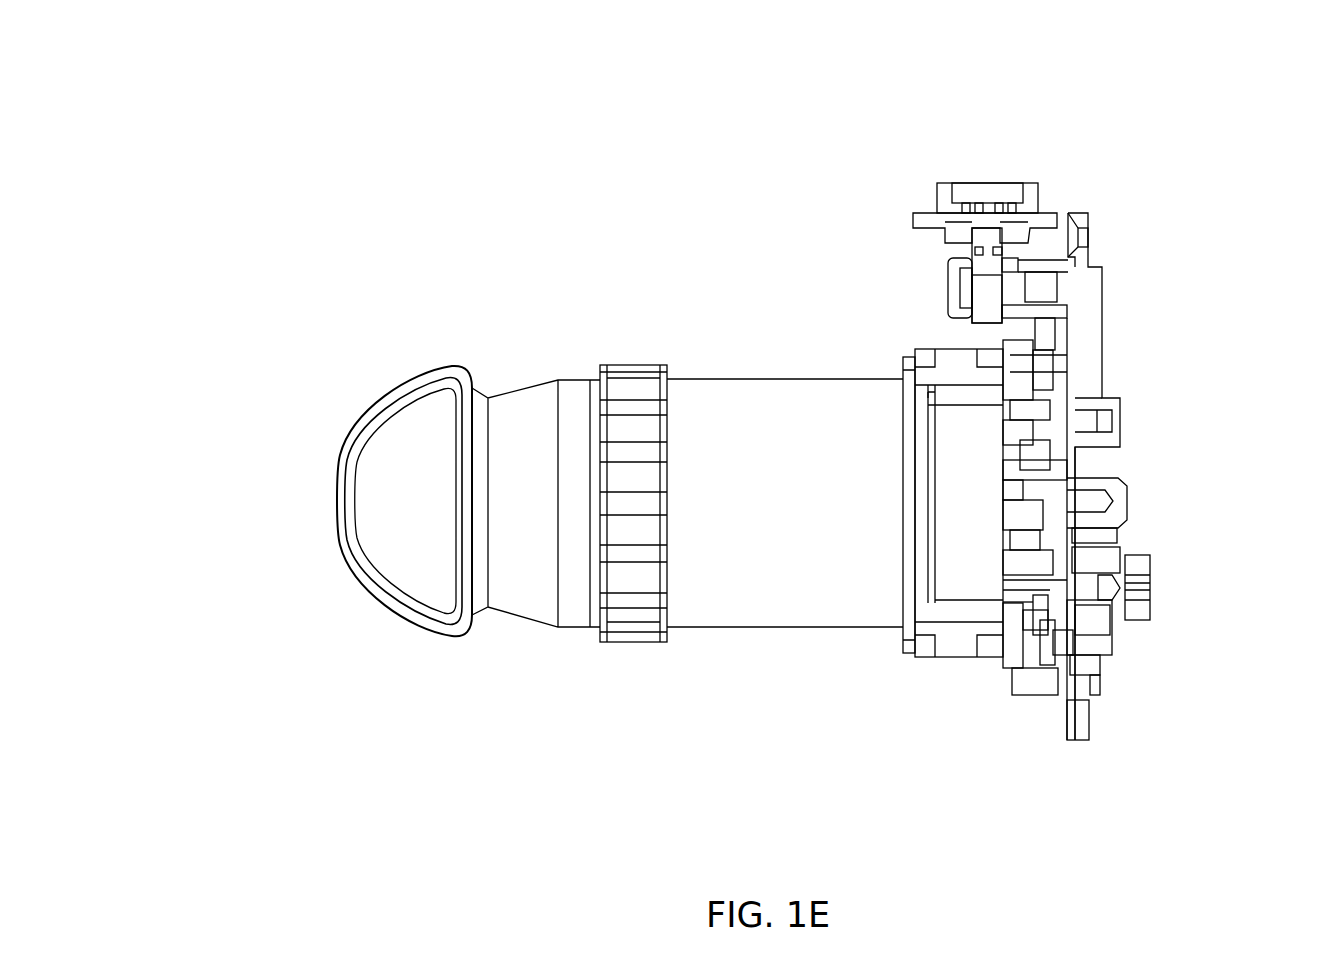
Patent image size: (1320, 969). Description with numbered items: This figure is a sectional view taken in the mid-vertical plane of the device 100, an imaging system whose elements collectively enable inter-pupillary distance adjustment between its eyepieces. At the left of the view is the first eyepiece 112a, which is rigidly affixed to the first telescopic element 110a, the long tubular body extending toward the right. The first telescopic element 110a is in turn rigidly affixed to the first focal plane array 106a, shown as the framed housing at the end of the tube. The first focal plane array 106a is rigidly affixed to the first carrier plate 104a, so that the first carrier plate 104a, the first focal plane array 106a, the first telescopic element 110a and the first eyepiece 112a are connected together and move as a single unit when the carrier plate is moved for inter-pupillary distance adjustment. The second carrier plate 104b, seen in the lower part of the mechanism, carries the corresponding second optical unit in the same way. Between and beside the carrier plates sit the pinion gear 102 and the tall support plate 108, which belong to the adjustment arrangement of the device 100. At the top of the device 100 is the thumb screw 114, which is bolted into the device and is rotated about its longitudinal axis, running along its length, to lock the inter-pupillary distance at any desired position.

The device 100 is at (130, 52).
The pinion gear 102 is at (1030, 480).
The first carrier plate 104a is at (1040, 358).
The second carrier plate 104b is at (1044, 665).
The first focal plane array 106a is at (972, 463).
The support plate 108 is at (1088, 321).
The first telescopic element 110a is at (798, 520).
The first eyepiece 112a is at (525, 440).
The thumb screw 114 is at (990, 197).